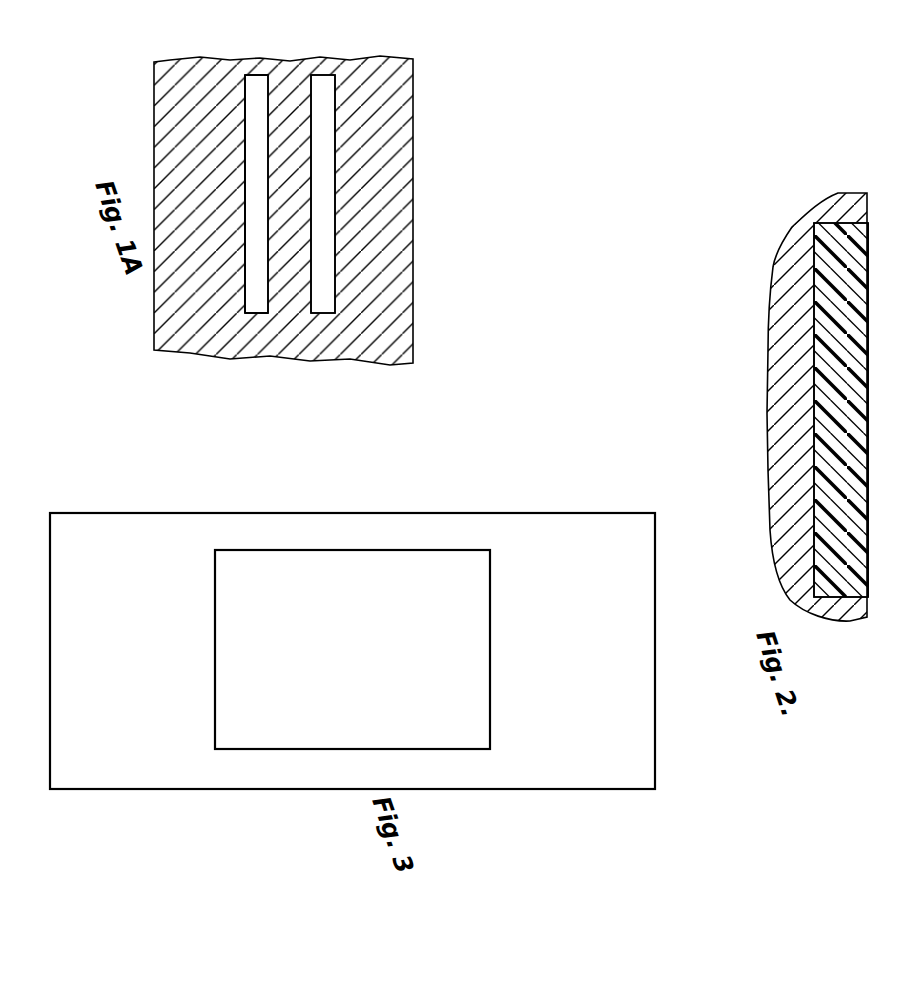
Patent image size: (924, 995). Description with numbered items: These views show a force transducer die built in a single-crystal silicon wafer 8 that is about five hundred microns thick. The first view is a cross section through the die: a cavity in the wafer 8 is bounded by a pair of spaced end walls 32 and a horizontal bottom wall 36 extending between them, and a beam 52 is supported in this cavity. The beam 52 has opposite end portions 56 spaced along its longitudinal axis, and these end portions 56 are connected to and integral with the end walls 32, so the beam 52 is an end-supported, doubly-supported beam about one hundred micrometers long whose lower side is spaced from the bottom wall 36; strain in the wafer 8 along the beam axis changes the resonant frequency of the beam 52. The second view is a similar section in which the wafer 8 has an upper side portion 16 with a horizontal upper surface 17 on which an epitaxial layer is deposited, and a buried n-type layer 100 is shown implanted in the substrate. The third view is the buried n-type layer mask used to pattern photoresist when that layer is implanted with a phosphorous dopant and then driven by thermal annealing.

In FIG. 1A, the wafer 8 is at (402, 229).
In FIG. 2, the wafer 8 is at (795, 570).
In FIG. 1A, the end walls 32 is at (313, 78).
In FIG. 1A, the bottom wall 36 is at (239, 192).
In FIG. 1A, the beam 52 is at (282, 203).
In FIG. 1A, the end portions 56 is at (262, 82).
In FIG. 2, the coating layer 100 is at (814, 271).
In FIG. 2, the upper side portion 16 is at (880, 563).
In FIG. 2, the upper surface 17 is at (880, 413).